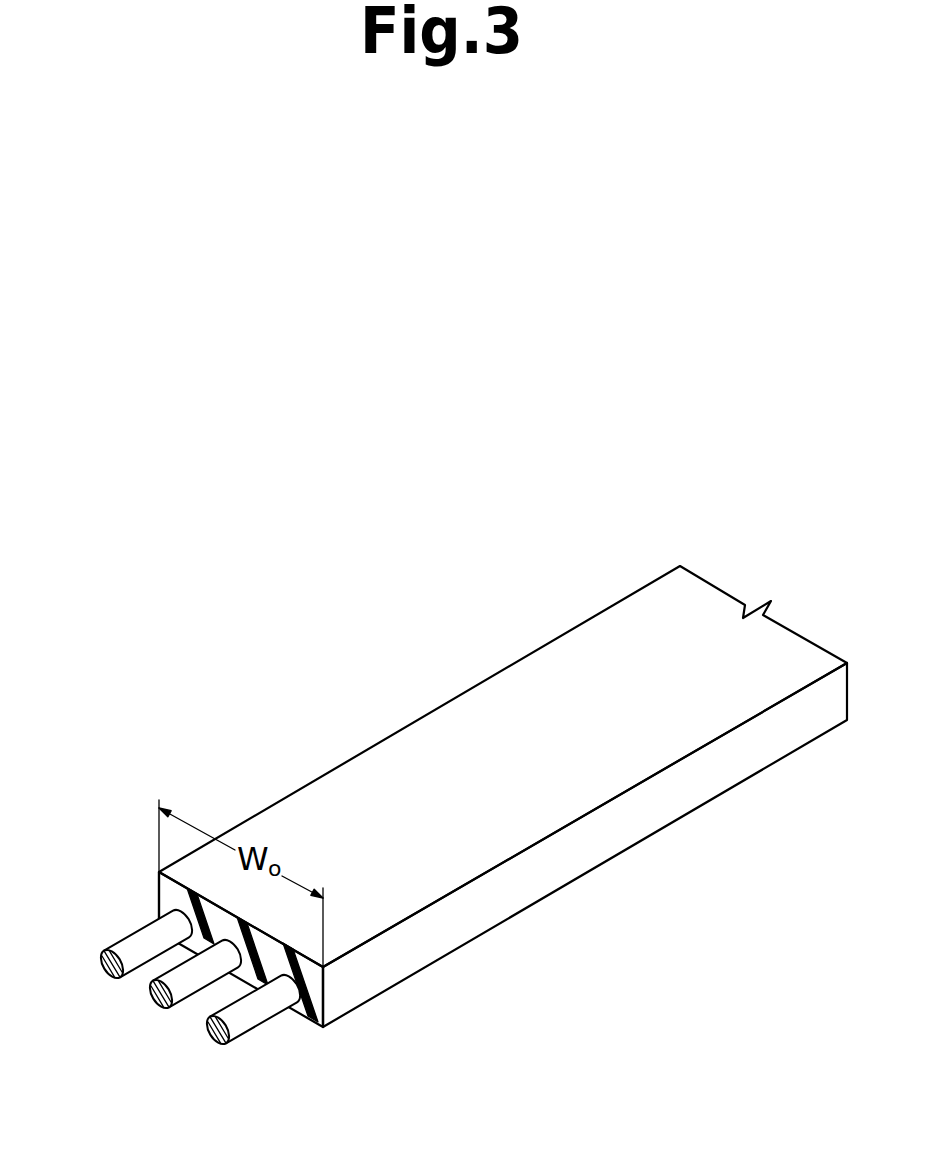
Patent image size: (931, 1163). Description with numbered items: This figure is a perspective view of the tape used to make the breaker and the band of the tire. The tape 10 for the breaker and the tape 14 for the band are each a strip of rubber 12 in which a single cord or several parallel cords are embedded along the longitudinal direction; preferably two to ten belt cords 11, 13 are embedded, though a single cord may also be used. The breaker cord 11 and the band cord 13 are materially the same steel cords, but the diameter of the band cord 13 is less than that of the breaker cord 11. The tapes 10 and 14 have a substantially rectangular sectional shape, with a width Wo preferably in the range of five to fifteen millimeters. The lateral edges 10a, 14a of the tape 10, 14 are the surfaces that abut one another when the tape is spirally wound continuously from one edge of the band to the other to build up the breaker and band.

The tape 10 is at (503, 788).
The tape 14 is at (503, 796).
The edge of tape 10a is at (503, 796).
The edge of tape 14a is at (506, 903).
The breaker cord 11 is at (165, 1023).
The band cord 13 is at (111, 990).
The rubber 12 is at (272, 962).